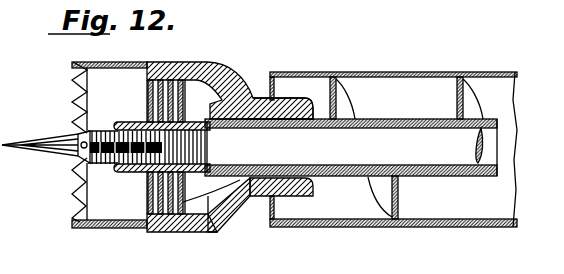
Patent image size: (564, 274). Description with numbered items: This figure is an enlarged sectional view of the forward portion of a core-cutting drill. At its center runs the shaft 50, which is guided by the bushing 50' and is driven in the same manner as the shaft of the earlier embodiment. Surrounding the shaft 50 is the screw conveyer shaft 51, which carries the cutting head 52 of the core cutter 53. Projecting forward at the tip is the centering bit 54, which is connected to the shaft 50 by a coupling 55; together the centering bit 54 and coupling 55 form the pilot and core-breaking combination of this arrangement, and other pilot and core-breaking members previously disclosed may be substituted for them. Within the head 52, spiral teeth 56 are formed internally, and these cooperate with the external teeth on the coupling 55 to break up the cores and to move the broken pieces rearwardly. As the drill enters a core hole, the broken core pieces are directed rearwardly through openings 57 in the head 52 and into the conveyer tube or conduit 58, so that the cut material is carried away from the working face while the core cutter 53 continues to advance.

The shaft 50 is at (393, 149).
The bushing 50' is at (278, 116).
The screw conveyer shaft 51 is at (373, 120).
The cutting head 52 is at (214, 65).
The core cutter 53 is at (74, 77).
The centering bit 54 is at (29, 137).
The coupling 55 is at (131, 121).
The spiral teeth 56 is at (147, 231).
The openings 57 is at (207, 192).
The conveyer tube 58 is at (363, 73).